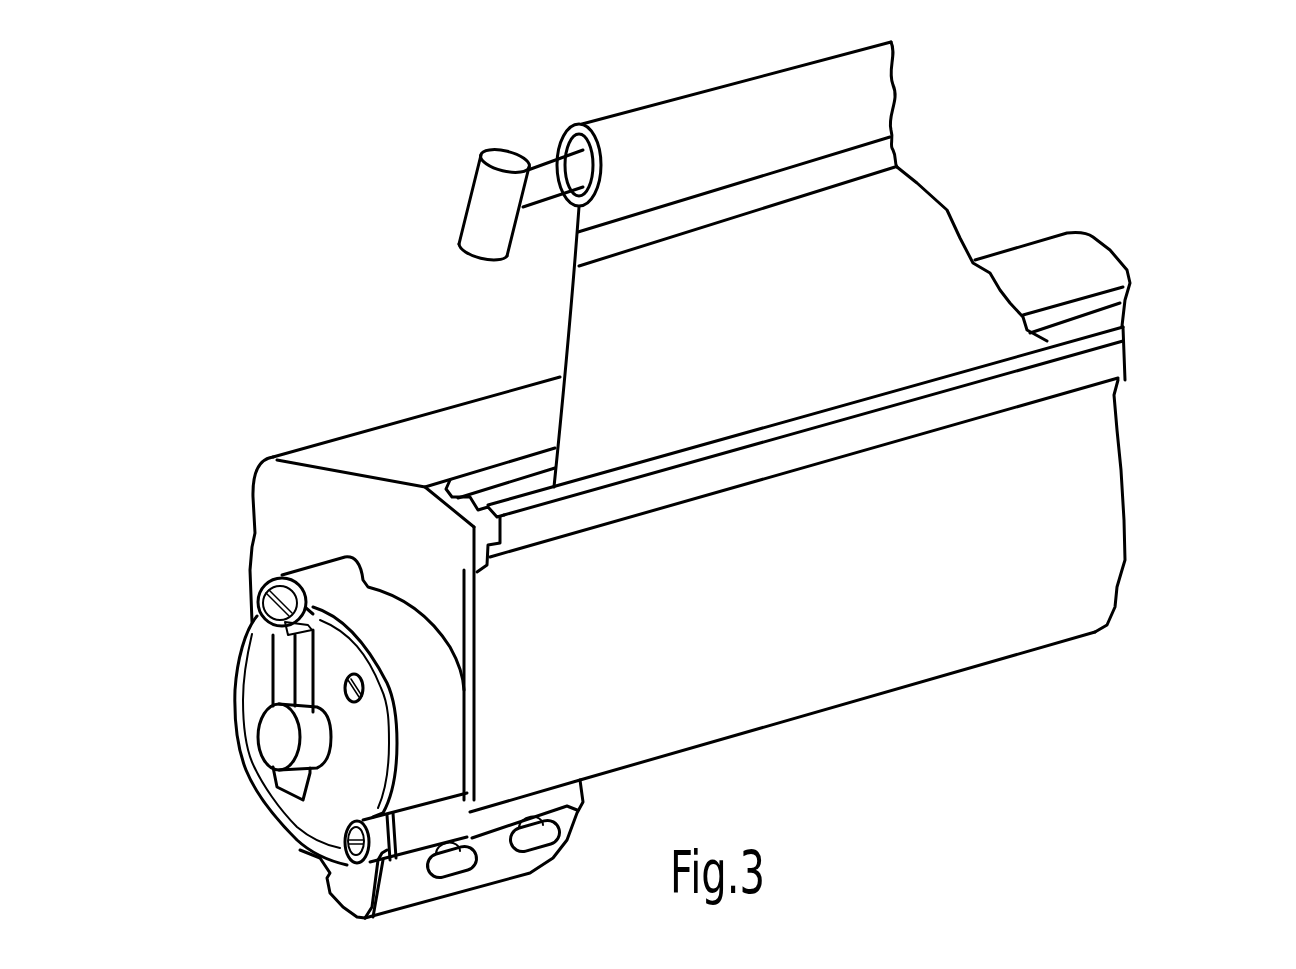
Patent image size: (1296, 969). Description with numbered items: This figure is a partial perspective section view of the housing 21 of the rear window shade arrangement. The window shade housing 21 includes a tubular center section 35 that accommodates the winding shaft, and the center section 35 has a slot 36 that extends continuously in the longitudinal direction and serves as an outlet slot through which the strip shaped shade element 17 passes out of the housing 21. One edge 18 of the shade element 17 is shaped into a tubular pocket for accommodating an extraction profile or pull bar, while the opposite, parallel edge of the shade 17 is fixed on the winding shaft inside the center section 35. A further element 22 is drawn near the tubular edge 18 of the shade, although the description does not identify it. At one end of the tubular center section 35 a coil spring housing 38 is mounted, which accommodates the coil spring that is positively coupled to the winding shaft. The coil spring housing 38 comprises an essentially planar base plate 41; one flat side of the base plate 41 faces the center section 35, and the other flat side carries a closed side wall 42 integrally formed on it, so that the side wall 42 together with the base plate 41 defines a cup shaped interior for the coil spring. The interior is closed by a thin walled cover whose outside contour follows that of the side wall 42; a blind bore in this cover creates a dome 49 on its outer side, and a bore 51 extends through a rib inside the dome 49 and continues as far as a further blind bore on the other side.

The strip shaped shade element 17 is at (798, 347).
The edge 18 is at (657, 137).
The housing 21 is at (923, 722).
The knob 22 is at (500, 160).
The tubular center section 35 is at (1007, 610).
The slot 36 is at (1127, 297).
The coil spring housing 38 is at (186, 445).
The base plate 41 is at (305, 472).
The side wall 42 is at (448, 749).
The dome 49 is at (273, 747).
The bore 51 is at (258, 620).